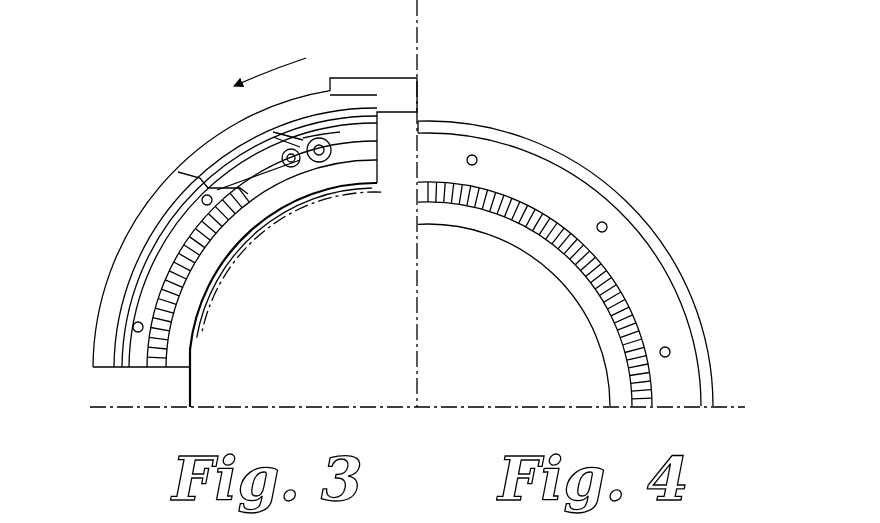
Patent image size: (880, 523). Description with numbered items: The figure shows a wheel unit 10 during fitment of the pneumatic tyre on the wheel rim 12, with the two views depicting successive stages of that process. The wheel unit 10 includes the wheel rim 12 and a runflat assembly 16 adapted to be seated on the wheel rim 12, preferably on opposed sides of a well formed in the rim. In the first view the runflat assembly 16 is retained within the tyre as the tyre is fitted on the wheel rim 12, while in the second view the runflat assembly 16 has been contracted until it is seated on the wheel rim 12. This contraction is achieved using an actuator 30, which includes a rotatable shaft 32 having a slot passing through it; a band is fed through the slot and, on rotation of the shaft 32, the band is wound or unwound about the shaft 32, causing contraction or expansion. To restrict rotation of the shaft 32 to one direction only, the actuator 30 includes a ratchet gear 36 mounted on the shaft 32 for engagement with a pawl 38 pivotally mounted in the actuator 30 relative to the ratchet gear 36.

In FIG. 3, the wheel unit 10 is at (153, 123).
In FIG. 4, the wheel unit 10 is at (642, 184).
In FIG. 3, the wheel rim 12 is at (213, 338).
In FIG. 4, the wheel rim 12 is at (565, 352).
In FIG. 3, the runflat assembly 16 is at (172, 262).
In FIG. 4, the runflat assembly 16 is at (528, 198).
In FIG. 3, the actuator 30 is at (297, 128).
In FIG. 3, the rotatable shaft 32 is at (322, 163).
In FIG. 3, the ratchet gear 36 is at (334, 136).
In FIG. 3, the pawl 38 is at (294, 168).